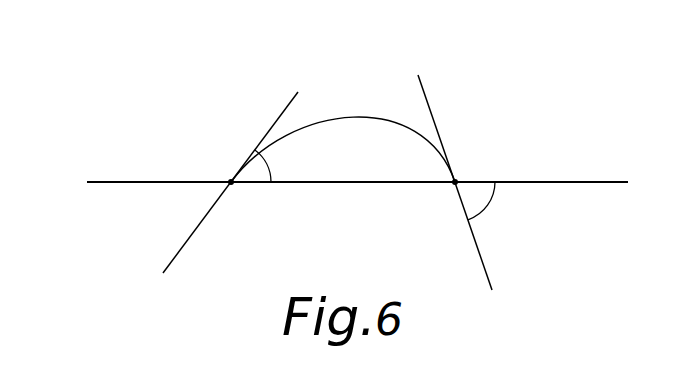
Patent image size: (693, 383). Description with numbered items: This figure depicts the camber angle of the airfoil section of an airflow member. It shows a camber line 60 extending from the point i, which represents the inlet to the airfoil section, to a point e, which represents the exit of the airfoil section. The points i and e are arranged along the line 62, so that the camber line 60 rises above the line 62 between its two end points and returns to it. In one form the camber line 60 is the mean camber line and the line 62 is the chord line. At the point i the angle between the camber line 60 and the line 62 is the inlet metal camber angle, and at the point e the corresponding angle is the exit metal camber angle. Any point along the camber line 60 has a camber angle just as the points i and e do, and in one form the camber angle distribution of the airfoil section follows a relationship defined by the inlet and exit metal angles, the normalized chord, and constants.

The camber line 60 is at (366, 116).
The line 62 is at (126, 180).
The point i is at (230, 182).
The point e is at (455, 182).